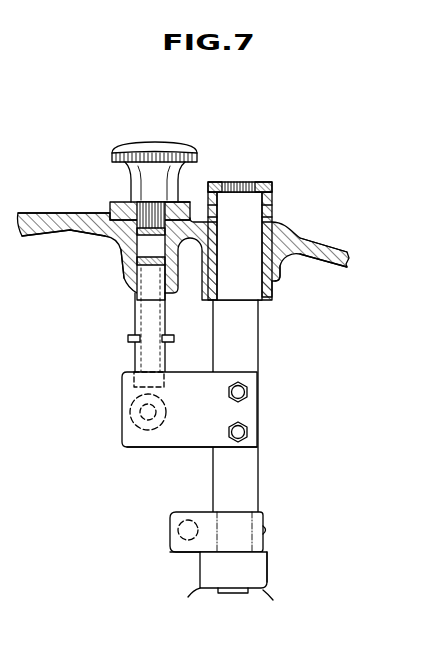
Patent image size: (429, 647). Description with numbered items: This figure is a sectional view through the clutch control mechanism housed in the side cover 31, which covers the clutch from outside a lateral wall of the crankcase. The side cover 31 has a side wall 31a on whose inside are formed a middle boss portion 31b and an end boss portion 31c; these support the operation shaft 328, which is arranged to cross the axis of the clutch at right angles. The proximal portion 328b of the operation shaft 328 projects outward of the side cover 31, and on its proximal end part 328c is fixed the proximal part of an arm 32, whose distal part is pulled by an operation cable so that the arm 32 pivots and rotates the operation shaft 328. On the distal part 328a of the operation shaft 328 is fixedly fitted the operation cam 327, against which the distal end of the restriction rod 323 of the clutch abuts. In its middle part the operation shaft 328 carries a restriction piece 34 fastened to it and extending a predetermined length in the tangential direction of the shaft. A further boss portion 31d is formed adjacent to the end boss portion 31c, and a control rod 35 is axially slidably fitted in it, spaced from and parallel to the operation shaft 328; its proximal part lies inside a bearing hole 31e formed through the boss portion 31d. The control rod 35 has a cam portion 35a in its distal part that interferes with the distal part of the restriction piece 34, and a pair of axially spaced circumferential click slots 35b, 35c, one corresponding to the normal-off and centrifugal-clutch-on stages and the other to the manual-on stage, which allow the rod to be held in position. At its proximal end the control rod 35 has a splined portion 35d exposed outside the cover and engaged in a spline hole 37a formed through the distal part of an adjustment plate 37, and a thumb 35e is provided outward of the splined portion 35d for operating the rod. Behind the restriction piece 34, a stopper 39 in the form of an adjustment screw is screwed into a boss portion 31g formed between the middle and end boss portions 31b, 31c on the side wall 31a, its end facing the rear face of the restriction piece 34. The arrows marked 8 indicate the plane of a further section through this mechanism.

The section line 8- 8 is at (155, 135).
The side cover 31 is at (350, 256).
The side wall 31a is at (40, 215).
The middle boss portion 31b is at (272, 560).
The end boss portion 31c is at (277, 282).
The boss portion 31d is at (125, 248).
The bearing hole 31e is at (140, 292).
The boss portion 31g is at (152, 433).
The arm 32 is at (273, 193).
The restriction piece 34 is at (191, 377).
The control rod 35 is at (133, 323).
The cam portion 35a is at (128, 375).
The click slot 35b is at (136, 252).
The click slot 35c is at (166, 287).
The splined portion 35d is at (185, 203).
The thumb 35e is at (168, 158).
The adjustment plate 37 is at (117, 201).
The spline hole 37a is at (110, 237).
The stopper 39 is at (138, 412).
The restriction rod 323 is at (176, 530).
The operation cam 327 is at (182, 553).
The operation shaft 328 is at (250, 480).
The distal part 328a is at (250, 577).
The proximal portion 328b is at (253, 238).
The proximal end part 328c is at (252, 182).